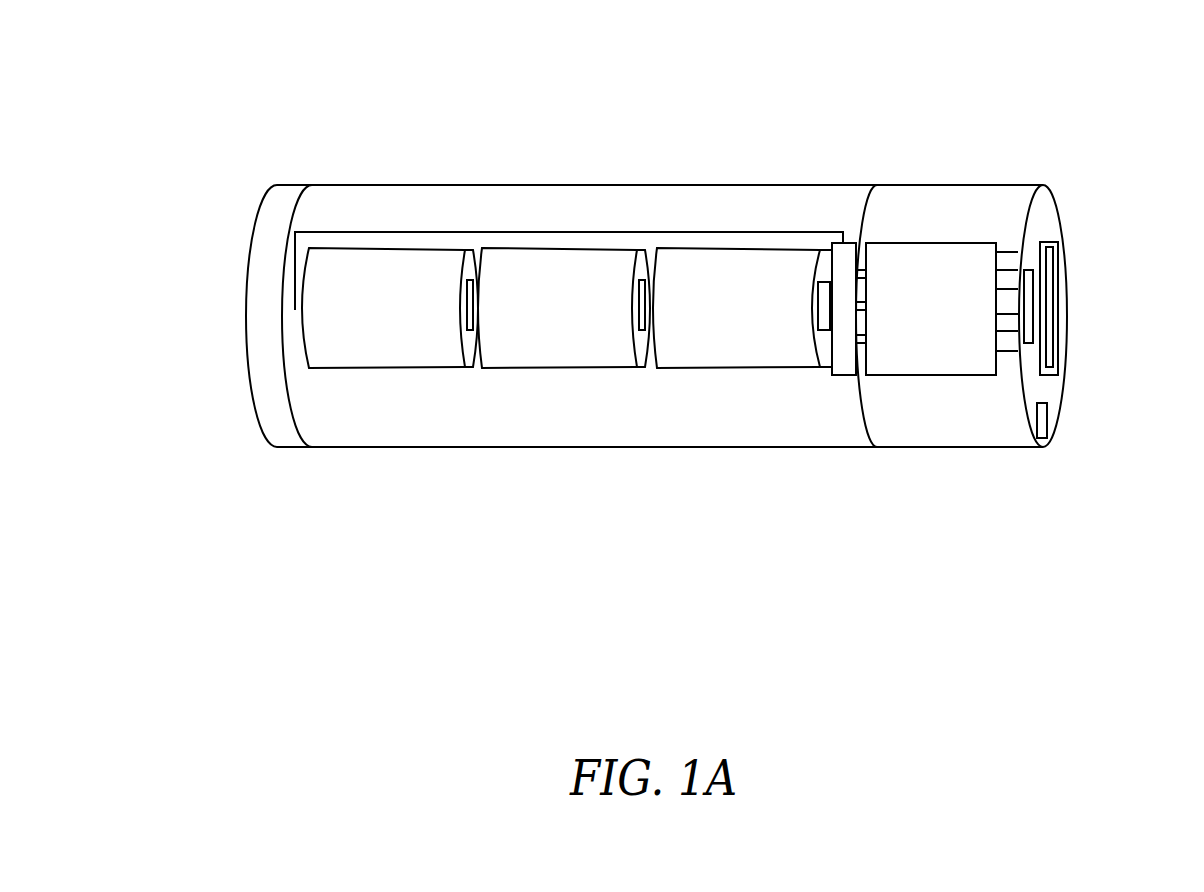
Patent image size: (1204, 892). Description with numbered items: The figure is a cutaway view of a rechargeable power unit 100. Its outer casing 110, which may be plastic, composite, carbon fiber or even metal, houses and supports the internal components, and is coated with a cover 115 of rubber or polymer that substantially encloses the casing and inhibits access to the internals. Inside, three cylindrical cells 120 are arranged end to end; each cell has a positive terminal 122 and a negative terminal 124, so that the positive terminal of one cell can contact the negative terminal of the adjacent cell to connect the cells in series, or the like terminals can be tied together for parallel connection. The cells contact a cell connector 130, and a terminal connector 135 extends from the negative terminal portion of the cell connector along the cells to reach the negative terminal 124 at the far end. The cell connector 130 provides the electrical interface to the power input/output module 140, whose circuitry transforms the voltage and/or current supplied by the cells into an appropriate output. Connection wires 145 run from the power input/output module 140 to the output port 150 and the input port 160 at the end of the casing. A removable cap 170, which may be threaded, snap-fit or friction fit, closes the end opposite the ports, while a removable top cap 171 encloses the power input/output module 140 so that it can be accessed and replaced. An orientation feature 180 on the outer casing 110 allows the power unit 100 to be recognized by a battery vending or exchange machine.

The rechargeable power unit 100 is at (615, 123).
The outer casing 110 is at (622, 450).
The cover 115 is at (565, 457).
The cells 120 is at (522, 345).
The positive terminal 122 is at (470, 298).
The negative terminal 124 is at (295, 310).
The cell connector 130 is at (848, 355).
The terminal connector 135 is at (713, 231).
The power input/output module 140 is at (913, 262).
The connection wires 145 is at (1008, 352).
The output port 150 is at (1058, 257).
The input port 160 is at (1028, 325).
The cap 170 is at (262, 330).
The top cap 171 is at (937, 418).
The orientation feature 180 is at (1048, 423).